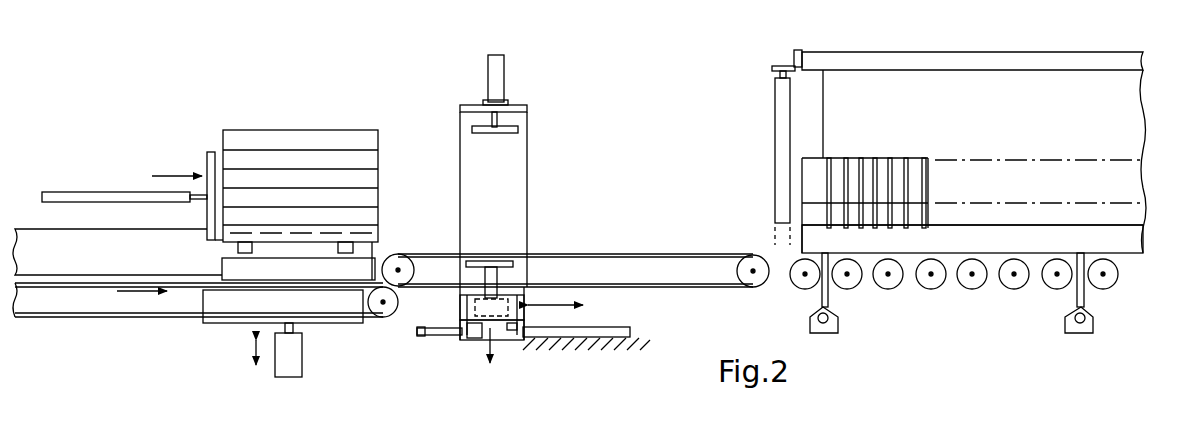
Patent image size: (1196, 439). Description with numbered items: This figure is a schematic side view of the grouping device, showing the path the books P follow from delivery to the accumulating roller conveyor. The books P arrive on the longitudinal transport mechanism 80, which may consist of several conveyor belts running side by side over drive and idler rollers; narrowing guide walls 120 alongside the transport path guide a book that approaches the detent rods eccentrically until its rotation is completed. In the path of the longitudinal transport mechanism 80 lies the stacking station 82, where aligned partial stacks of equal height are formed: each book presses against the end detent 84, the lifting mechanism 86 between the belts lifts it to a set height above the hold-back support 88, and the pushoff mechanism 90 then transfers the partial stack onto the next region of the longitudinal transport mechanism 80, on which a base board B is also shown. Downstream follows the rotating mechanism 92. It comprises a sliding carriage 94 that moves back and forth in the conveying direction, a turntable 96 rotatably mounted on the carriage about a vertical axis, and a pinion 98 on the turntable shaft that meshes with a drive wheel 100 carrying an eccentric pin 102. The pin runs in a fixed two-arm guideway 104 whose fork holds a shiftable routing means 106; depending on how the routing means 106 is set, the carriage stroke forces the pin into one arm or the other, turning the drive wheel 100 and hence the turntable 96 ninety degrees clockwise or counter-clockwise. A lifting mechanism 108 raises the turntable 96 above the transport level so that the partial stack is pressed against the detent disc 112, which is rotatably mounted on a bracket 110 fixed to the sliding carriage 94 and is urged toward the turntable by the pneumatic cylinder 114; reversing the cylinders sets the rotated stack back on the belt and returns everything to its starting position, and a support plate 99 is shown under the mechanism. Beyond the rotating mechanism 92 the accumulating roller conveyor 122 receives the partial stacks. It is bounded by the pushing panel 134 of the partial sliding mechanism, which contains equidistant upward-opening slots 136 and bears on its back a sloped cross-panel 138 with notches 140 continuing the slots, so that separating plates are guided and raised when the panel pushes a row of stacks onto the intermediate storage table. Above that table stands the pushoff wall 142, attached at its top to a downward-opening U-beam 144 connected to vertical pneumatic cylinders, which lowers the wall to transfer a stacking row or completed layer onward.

The longitudinal transport mechanism 80 is at (73, 288).
The stacking station 82 is at (196, 328).
The end detent 84 is at (385, 250).
The lifting mechanism 86 is at (298, 365).
The hold-back support 88 is at (237, 246).
The pushoff mechanism 90 is at (109, 191).
The rotating mechanism 92 is at (547, 110).
The sliding carriage 94 is at (483, 340).
The turntable 96 is at (508, 264).
The pinion 98 is at (475, 310).
The support plate 99 is at (420, 334).
The drive wheel 100 is at (538, 270).
The eccentric pin 102 is at (508, 328).
The two-arm guideway 104 is at (610, 337).
The routing means 106 is at (540, 330).
The lifting mechanism 108 is at (493, 345).
The bracket 110 is at (517, 165).
The detent disc 112 is at (472, 129).
The pneumatic cylinder 114 is at (488, 73).
The guide walls 120 is at (67, 238).
The accumulating roller conveyor 122 is at (881, 297).
The pushing panel 134 is at (818, 188).
The slots 136 is at (860, 157).
The cross-panel 138 is at (1030, 220).
The notches 140 is at (920, 228).
The pushoff wall 142 is at (1122, 127).
The U-beam 144 is at (1088, 66).
The books P is at (298, 130).
The base board B is at (240, 272).